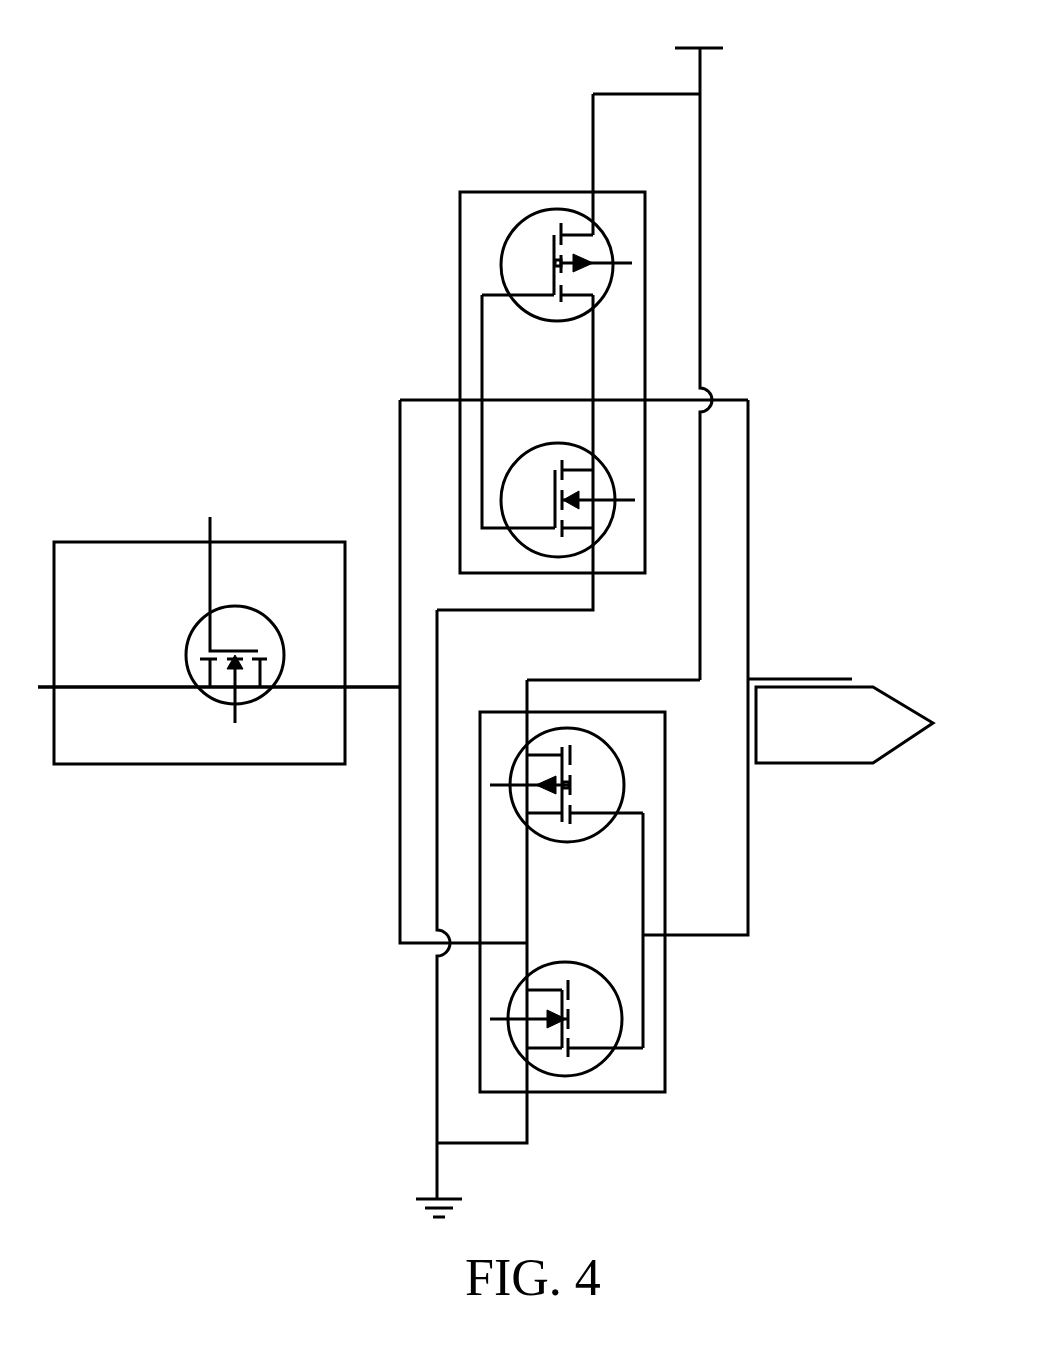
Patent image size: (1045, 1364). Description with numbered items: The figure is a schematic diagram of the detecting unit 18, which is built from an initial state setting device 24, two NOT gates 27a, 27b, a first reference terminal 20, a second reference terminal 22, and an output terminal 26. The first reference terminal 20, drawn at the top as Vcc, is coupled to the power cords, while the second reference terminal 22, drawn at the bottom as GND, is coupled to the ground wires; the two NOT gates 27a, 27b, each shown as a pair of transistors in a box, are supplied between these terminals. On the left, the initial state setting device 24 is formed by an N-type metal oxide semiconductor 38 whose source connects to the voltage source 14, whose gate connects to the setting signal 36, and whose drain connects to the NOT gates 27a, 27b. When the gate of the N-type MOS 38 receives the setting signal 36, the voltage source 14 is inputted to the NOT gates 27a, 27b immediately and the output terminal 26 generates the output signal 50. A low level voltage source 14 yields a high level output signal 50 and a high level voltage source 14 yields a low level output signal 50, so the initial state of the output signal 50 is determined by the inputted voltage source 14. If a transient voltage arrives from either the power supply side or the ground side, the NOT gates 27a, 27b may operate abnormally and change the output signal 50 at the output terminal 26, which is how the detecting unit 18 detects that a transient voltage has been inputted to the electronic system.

The voltage source 14 is at (113, 690).
The detecting unit 18 is at (378, 168).
The first reference terminal 20 is at (700, 70).
The second reference terminal 22 is at (440, 1160).
The initial state setting device 24 is at (112, 540).
The output terminal 26 is at (805, 679).
The NOT gate 27a is at (503, 190).
The NOT gate 27b is at (491, 712).
The setting signal 36 is at (212, 560).
The N-type metal oxide semiconductor 38 is at (255, 697).
The output signal 50 is at (844, 724).